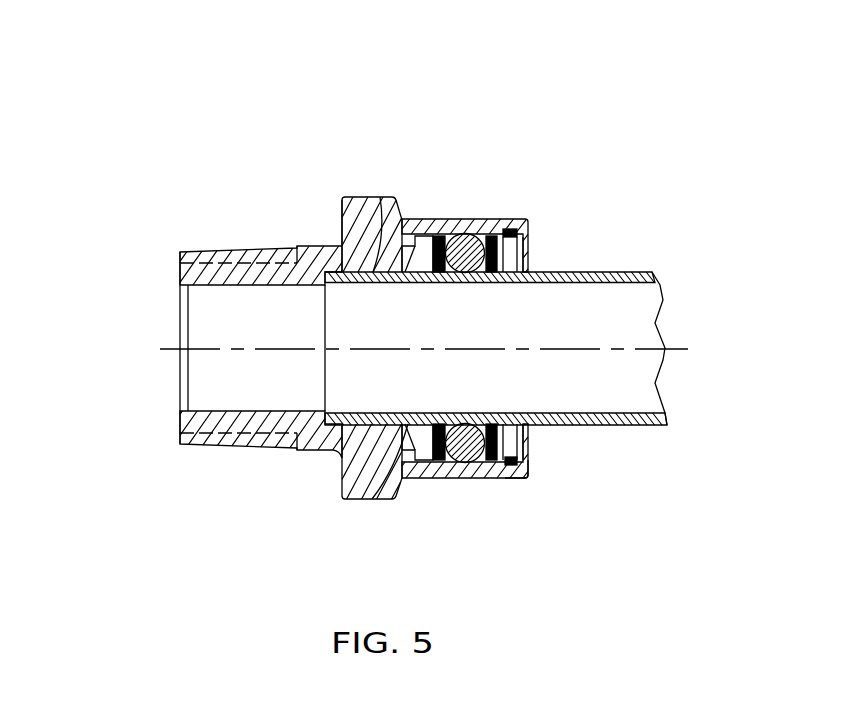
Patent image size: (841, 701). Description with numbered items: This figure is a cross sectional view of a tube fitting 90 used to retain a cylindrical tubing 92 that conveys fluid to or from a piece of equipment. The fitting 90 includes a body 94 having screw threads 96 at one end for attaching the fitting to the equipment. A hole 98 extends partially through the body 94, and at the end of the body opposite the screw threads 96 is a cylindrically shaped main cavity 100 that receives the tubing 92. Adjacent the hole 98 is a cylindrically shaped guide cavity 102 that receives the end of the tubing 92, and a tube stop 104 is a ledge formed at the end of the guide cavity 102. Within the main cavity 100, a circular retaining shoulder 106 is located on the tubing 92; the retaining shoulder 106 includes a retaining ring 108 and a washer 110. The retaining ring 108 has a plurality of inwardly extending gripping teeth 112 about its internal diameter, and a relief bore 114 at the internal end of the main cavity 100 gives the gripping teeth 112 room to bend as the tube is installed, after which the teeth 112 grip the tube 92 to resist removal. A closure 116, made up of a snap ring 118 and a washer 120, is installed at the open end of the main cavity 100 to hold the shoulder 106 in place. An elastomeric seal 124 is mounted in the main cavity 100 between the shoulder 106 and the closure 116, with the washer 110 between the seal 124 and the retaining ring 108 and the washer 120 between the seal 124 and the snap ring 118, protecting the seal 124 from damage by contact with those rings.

The fitting 90 is at (395, 602).
The tubing 92 is at (605, 272).
The body 94 is at (303, 243).
The screw threads 96 is at (215, 445).
The hole 98 is at (212, 315).
The main cavity 100 is at (520, 266).
The guide cavity 102 is at (380, 197).
The tube stop 104 is at (345, 195).
The retaining shoulder 106 is at (435, 238).
The retaining ring 108 is at (435, 478).
The washer 110 is at (456, 478).
The gripping teeth 112 is at (425, 240).
The relief bore 114 is at (375, 498).
The closure 116 is at (490, 235).
The snap ring 118 is at (518, 478).
The washer 120 is at (512, 460).
The elastomeric seal 124 is at (465, 233).